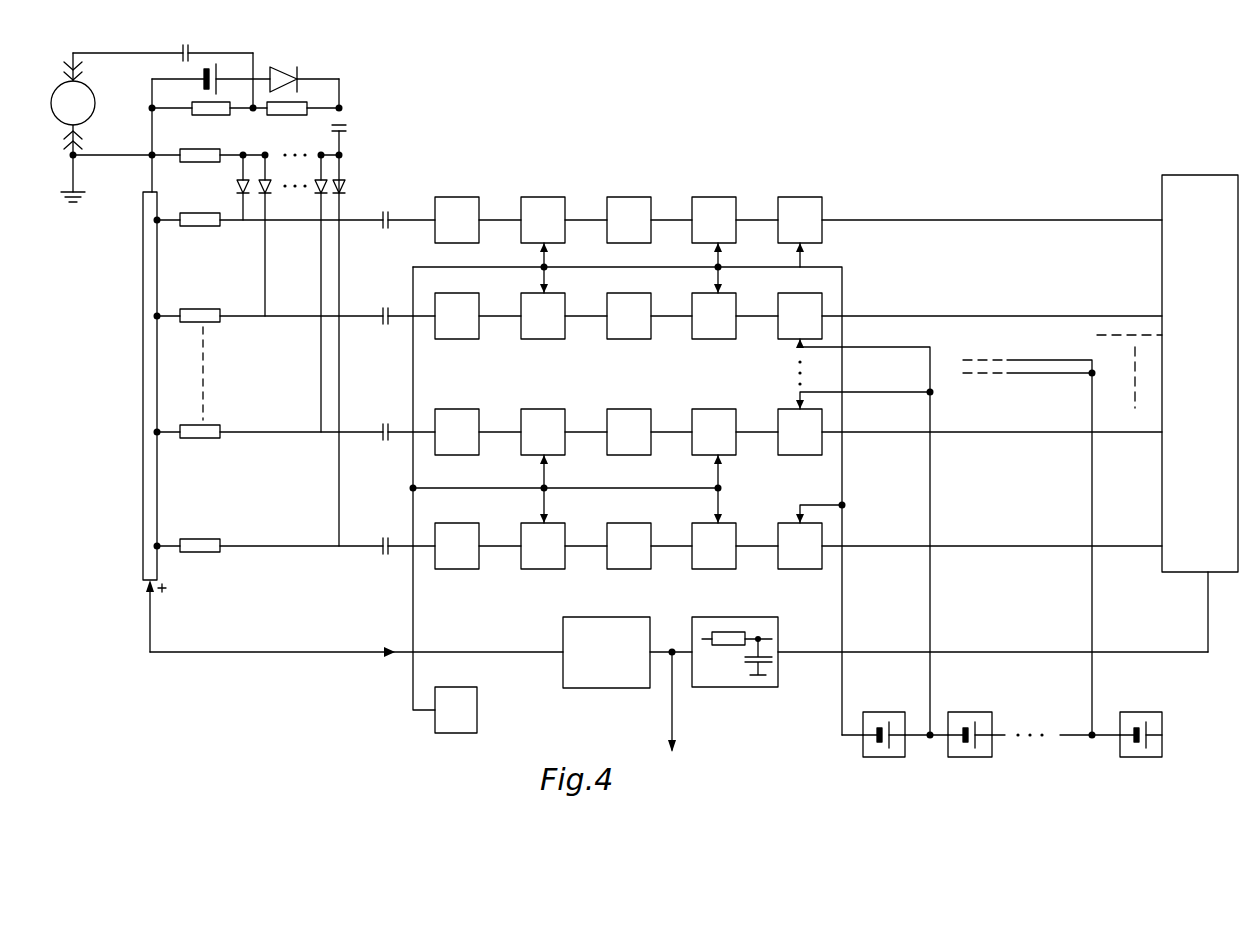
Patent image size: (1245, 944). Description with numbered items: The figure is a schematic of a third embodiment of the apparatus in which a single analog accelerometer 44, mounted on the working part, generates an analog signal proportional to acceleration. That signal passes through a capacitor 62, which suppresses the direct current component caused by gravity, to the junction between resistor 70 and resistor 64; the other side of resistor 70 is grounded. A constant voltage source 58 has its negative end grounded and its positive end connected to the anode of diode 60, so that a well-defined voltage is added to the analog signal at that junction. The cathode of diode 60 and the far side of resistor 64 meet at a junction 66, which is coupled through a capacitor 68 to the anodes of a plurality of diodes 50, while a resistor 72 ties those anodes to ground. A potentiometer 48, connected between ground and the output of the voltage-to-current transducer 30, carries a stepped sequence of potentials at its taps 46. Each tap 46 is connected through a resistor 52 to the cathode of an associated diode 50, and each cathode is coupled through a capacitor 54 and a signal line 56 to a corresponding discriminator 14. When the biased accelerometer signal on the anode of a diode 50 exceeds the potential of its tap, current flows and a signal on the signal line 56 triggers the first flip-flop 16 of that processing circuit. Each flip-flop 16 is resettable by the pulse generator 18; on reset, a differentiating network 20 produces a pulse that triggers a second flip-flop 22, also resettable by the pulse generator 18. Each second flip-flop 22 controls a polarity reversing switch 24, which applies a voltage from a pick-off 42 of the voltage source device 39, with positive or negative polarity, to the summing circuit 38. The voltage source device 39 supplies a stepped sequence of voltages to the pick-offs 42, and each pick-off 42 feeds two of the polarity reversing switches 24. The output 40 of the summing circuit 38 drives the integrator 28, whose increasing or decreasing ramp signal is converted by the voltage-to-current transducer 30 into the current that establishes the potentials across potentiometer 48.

The discriminator 14 is at (468, 206).
The flip-flop 16 is at (554, 204).
The pulse generator 18 is at (462, 698).
The differentiating network 20 is at (636, 204).
The second flip-flop 22 is at (721, 204).
The polarity reversing switch 24 is at (806, 204).
The integrator 28 is at (741, 677).
The voltage-to-current transducer 30 is at (609, 689).
The summing circuit 38 is at (1176, 241).
The voltage source device 39 is at (995, 739).
The output of summing circuit 40 is at (1209, 628).
The pick-offs 42 is at (845, 698).
The analog accelerometer 44 is at (95, 113).
The taps 46 is at (160, 224).
The potentiometer 48 is at (143, 388).
The diodes 50 is at (238, 187).
The resistors 52 is at (191, 213).
The capacitors 54 is at (388, 211).
The signal lines 56 is at (392, 225).
The constant voltage source 58 is at (219, 81).
The diode 60 is at (285, 75).
The capacitor 62 is at (178, 57).
The resistor 64 is at (294, 109).
The junction 66 is at (342, 106).
The capacitor 68 is at (345, 126).
The resistor 70 is at (208, 110).
The resistor 72 is at (193, 153).